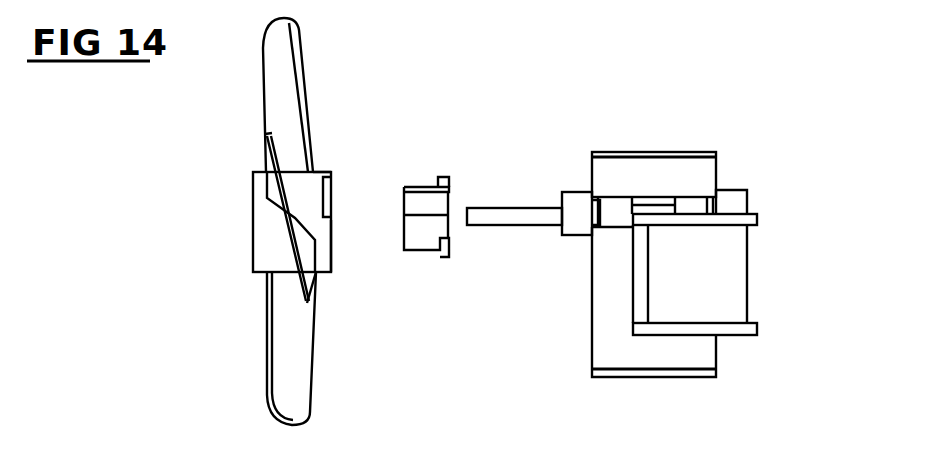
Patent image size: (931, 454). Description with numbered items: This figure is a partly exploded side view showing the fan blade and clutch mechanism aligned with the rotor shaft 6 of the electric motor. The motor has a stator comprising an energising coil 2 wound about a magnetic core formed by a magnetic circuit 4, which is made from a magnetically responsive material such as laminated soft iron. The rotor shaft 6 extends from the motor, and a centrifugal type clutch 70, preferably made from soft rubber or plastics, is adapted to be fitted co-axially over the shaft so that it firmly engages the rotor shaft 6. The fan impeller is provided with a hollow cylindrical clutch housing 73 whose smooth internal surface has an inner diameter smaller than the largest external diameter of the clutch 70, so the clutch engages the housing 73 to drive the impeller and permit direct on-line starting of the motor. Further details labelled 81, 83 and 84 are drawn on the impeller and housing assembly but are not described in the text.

The energising coil 2 is at (748, 253).
The magnetic circuit 4 is at (605, 280).
The rotor shaft 6 is at (505, 207).
The centrifugal type clutch 70 is at (418, 188).
The clutch housing 73 is at (263, 247).
The pin 81 is at (332, 209).
The hub upper portion 83 is at (331, 172).
The hub side portion 84 is at (331, 240).